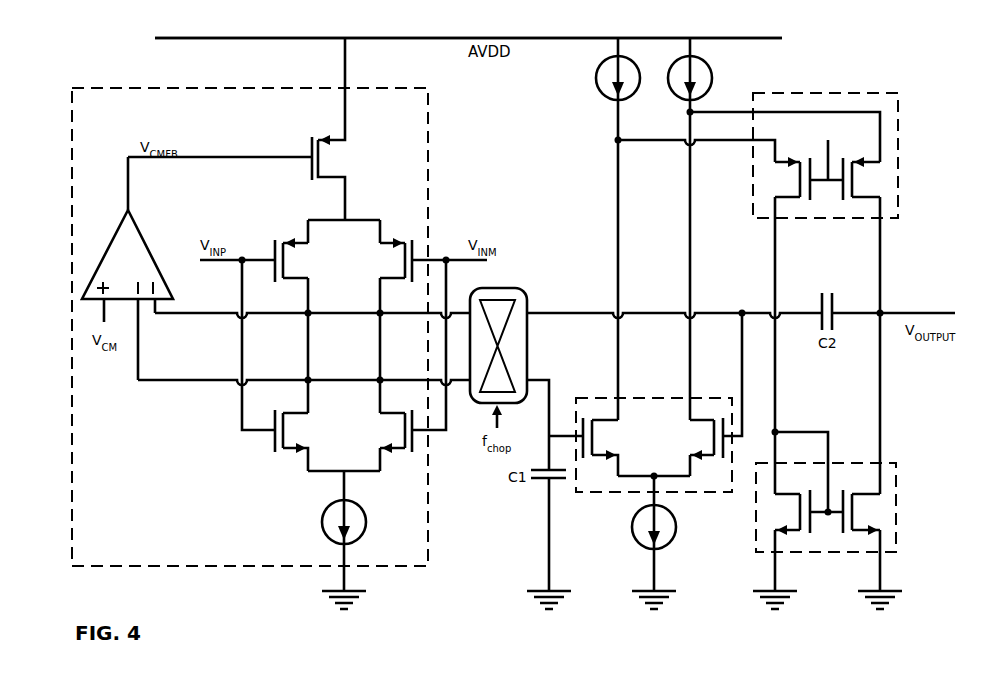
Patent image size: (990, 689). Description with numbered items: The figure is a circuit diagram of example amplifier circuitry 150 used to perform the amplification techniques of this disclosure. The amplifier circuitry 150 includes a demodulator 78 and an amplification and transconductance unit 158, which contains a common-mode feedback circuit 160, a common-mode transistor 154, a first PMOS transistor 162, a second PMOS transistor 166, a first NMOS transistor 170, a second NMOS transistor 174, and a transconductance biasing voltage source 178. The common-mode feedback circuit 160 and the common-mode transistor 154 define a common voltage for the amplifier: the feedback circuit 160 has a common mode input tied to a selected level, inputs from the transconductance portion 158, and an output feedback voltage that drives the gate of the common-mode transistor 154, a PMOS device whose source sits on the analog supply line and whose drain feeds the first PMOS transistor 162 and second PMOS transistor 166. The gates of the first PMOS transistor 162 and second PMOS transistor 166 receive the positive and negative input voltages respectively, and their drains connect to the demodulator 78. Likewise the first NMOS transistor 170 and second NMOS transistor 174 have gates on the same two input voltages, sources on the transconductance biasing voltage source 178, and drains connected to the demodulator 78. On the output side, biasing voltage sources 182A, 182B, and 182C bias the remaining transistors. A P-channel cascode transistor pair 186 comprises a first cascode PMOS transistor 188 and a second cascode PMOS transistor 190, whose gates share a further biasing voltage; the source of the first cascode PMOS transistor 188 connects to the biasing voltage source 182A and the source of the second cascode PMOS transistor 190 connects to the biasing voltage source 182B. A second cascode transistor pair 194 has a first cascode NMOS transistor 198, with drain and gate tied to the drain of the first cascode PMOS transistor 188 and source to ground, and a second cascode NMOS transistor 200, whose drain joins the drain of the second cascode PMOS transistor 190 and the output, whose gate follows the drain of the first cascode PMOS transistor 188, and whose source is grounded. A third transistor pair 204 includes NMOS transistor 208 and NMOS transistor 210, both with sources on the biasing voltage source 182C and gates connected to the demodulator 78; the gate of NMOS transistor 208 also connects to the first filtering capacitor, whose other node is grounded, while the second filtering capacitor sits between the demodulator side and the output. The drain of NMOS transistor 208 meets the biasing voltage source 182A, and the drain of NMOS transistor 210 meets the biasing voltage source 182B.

The amplifier circuitry 150 is at (870, 49).
The common-mode transistor 154 is at (304, 125).
The amplification and transconductance unit 158 is at (430, 485).
The common-mode feedback circuit 160 is at (157, 226).
The first PMOS transistor 162 is at (285, 265).
The second PMOS transistor 166 is at (394, 272).
The first NMOS transistor 170 is at (285, 432).
The second NMOS transistor 174 is at (394, 440).
The transconductance biasing voltage source 178 is at (375, 546).
The demodulator 78 is at (530, 280).
The biasing voltage source 182A is at (594, 102).
The biasing voltage source 182B is at (721, 62).
The biasing voltage source 182C is at (676, 554).
The P-channel cascode transistor pair 186 is at (827, 169).
The first cascode PMOS transistor 188 is at (780, 184).
The second cascode PMOS transistor 190 is at (870, 180).
The second cascode transistor pair 194 is at (825, 536).
The first cascode NMOS transistor 198 is at (777, 518).
The second cascode NMOS transistor 200 is at (870, 515).
The third transistor pair 204 is at (659, 416).
The NMOS transistor 208 is at (608, 435).
The NMOS transistor 210 is at (705, 444).